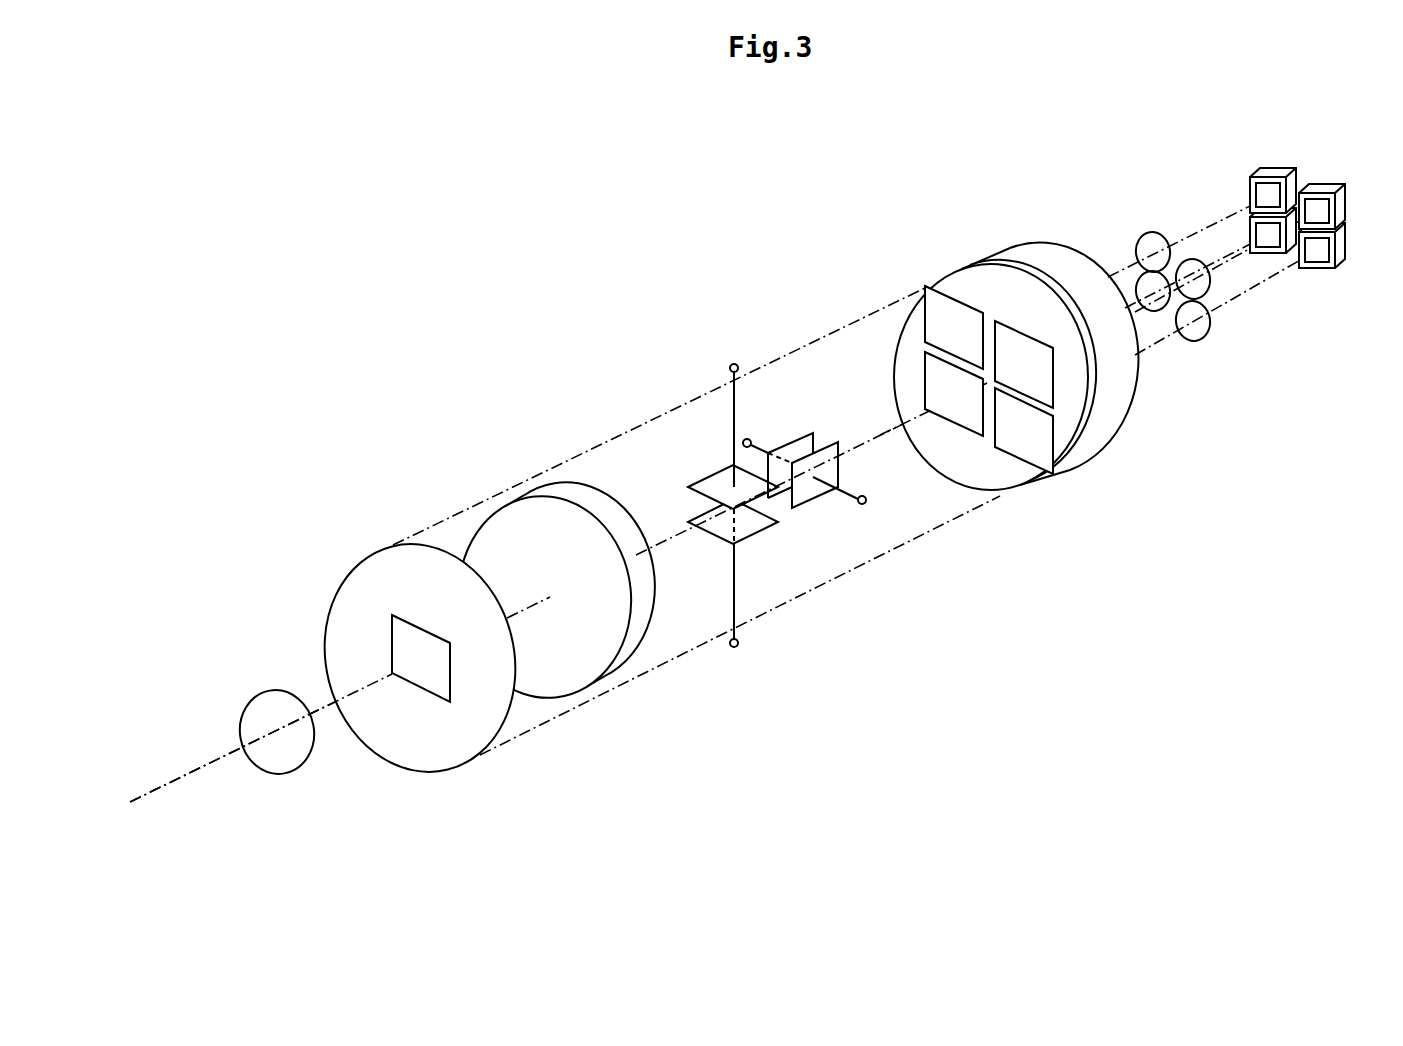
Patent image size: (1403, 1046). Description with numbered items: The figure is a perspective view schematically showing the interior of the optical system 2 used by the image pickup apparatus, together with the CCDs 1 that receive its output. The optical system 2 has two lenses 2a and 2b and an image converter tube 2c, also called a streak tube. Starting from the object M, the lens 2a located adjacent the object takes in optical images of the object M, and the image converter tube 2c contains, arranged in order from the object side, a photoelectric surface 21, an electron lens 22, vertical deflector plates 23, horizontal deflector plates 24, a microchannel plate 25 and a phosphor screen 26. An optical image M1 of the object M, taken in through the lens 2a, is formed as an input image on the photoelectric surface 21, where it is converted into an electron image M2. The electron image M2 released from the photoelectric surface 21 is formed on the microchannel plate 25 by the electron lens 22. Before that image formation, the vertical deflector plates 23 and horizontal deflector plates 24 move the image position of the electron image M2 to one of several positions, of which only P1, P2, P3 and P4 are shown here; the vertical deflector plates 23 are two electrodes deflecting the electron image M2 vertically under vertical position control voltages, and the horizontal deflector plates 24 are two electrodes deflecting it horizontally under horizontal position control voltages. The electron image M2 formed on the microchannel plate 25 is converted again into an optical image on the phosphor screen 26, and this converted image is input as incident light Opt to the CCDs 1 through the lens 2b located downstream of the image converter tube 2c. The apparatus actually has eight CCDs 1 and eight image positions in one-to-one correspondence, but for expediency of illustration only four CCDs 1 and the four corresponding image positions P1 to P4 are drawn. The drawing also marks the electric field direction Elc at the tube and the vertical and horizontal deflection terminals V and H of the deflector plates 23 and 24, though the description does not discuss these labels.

The CCD 1 is at (1250, 182).
The optical system 2 is at (663, 203).
The lens 2a is at (268, 772).
The lens 2b is at (1155, 233).
The image converter tube 2c is at (583, 430).
The photoelectric surface 21 is at (422, 745).
The electron lens 22 is at (592, 688).
The vertical deflector plates 23 is at (712, 482).
The horizontal deflector plates 24 is at (800, 440).
The microchannel plate 25 is at (997, 270).
The phosphor screen 26 is at (1110, 445).
The object M is at (146, 818).
The optical image M1 is at (442, 678).
The electron image M2 is at (1093, 250).
The image position P1 is at (922, 322).
The image position P2 is at (1053, 360).
The image position P3 is at (1013, 457).
The image position P4 is at (922, 362).
The incident light Opt is at (210, 756).
The electric field direction Elc is at (526, 595).
The vertical deflection terminal V is at (739, 505).
The horizontal deflection terminal H is at (804, 474).